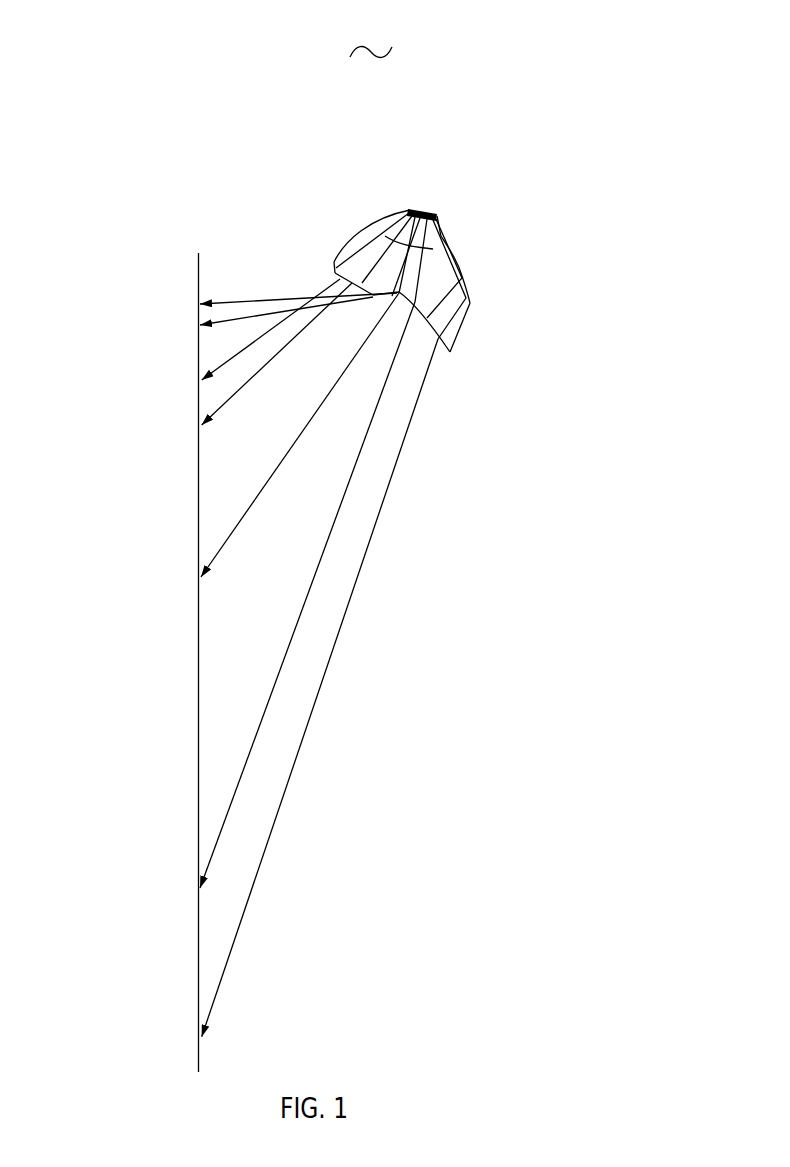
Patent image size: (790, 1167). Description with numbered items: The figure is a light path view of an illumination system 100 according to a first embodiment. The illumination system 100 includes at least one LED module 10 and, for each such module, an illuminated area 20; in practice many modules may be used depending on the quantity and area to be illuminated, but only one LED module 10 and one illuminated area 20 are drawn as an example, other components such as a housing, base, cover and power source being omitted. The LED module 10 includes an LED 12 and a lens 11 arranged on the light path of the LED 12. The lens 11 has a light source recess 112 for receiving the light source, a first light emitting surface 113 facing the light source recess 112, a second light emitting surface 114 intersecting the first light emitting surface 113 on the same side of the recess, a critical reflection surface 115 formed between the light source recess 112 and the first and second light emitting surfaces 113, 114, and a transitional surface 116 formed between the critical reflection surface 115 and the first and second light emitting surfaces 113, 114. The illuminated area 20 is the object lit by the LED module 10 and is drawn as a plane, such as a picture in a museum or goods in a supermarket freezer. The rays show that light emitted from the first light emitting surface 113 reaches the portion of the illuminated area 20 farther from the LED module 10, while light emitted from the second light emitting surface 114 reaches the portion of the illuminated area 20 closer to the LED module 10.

The illumination system 100 is at (371, 36).
The illuminated area 20 is at (197, 272).
The LED module 10 is at (638, 155).
The LED 12 is at (440, 207).
The lens 11 is at (587, 187).
The light source recess 112 is at (448, 214).
The second light emitting surface 114 is at (362, 287).
The critical reflection surface 115 is at (467, 283).
The first light emitting surface 113 is at (428, 314).
The transitional surface 116 is at (457, 340).